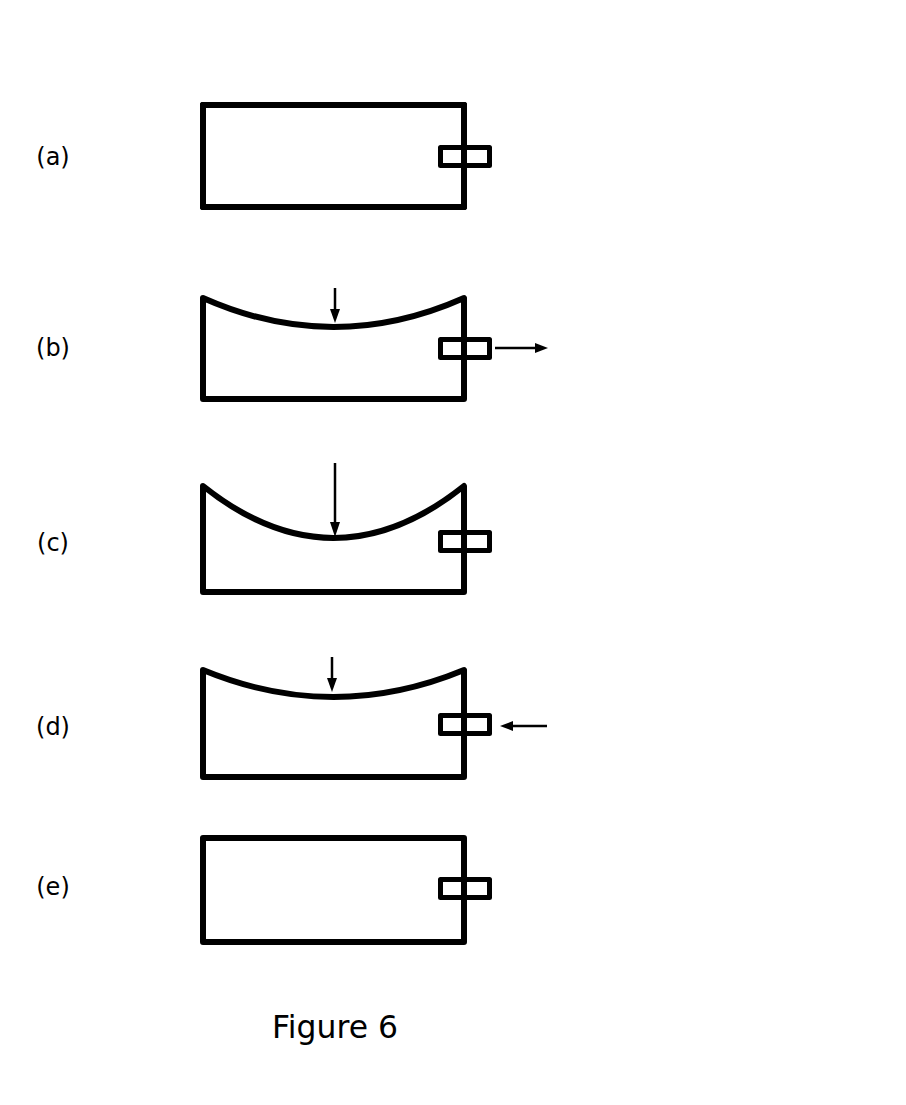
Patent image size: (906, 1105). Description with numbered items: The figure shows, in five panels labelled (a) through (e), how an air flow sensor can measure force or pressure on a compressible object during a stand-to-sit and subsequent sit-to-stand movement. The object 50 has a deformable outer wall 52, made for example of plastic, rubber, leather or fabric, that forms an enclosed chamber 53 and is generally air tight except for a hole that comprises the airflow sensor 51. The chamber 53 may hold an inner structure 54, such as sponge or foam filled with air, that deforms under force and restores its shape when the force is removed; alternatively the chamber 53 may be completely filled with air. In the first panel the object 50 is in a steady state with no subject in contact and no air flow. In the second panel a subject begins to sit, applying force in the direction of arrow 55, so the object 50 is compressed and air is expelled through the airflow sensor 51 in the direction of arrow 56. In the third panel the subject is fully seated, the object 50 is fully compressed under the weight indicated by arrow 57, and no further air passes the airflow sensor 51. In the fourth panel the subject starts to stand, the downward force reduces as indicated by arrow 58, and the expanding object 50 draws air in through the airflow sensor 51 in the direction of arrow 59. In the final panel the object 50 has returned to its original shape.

The object 50 is at (459, 83).
The airflow sensor 51 is at (493, 152).
The outer wall 52 is at (396, 105).
The enclosed chamber 53 is at (258, 122).
The inner structure 54 is at (227, 145).
The arrow 55 is at (351, 289).
The arrow 56 is at (534, 332).
The arrow 57 is at (351, 499).
The arrow 58 is at (349, 663).
The arrow 59 is at (540, 725).